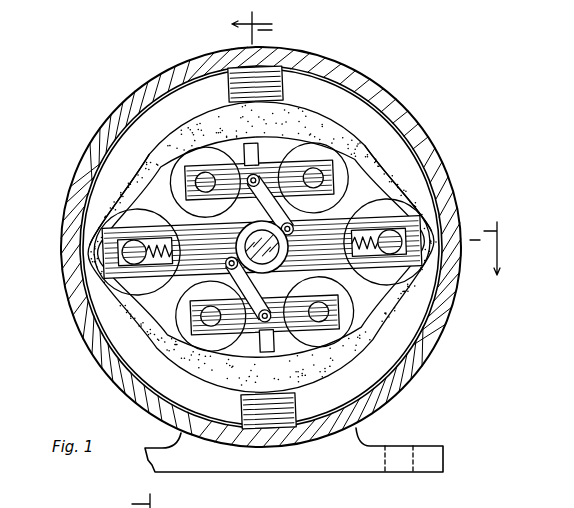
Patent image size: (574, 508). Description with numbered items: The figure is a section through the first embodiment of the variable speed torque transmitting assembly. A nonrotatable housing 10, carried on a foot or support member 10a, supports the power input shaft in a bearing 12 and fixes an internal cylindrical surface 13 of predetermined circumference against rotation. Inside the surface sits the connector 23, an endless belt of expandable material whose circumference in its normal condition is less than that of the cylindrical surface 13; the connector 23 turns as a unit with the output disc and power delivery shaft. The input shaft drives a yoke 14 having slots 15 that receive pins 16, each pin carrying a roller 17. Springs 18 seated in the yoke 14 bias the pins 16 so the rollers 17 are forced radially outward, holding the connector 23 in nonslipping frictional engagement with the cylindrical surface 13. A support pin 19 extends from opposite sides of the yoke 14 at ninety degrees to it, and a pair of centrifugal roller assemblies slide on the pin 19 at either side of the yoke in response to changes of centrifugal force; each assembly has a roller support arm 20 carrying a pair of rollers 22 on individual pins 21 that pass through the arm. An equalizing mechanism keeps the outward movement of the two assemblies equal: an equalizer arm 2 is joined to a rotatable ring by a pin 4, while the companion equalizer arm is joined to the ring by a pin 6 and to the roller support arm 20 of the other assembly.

The equalizer arm 2 is at (322, 256).
The pin 4 is at (290, 235).
The pin 6 is at (226, 265).
The housing 10 is at (100, 340).
The foot or support member 10a is at (353, 463).
The bearing 12 is at (302, 228).
The internal cylindrical surface 13 is at (343, 88).
The yoke 14 is at (336, 220).
The slots 15 is at (143, 262).
The pins 16 is at (140, 290).
The roller 17 is at (110, 236).
The springs 18 is at (172, 282).
The pin 19 is at (288, 250).
The roller support arm 20 is at (244, 165).
The pins 21 is at (207, 168).
The rollers 22 is at (332, 147).
The connector 23 is at (373, 324).